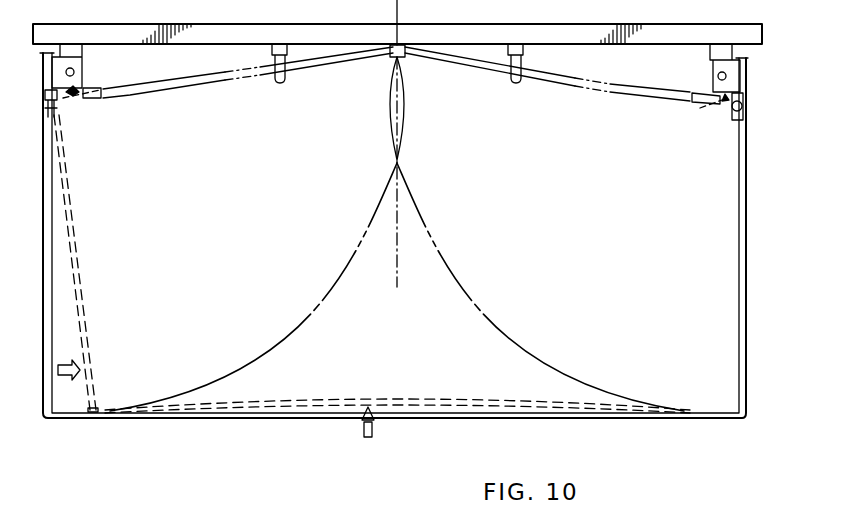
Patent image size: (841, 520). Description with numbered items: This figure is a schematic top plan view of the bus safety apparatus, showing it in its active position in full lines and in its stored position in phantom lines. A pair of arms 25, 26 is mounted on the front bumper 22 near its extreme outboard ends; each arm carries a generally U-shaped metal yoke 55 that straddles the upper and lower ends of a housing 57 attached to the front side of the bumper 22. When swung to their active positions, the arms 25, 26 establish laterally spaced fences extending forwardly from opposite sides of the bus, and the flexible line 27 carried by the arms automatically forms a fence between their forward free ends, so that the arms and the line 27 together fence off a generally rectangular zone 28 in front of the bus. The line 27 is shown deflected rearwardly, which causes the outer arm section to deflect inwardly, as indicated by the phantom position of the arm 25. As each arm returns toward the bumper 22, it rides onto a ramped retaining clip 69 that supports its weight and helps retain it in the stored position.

The front bumper 22 is at (168, 47).
The arm 25 is at (53, 343).
The arm 26 is at (733, 272).
The flexible line 27 is at (440, 400).
The zone 28 is at (532, 251).
The yoke 55 is at (73, 93).
The housing 57 is at (85, 59).
The ramped retaining clip 69 is at (280, 83).